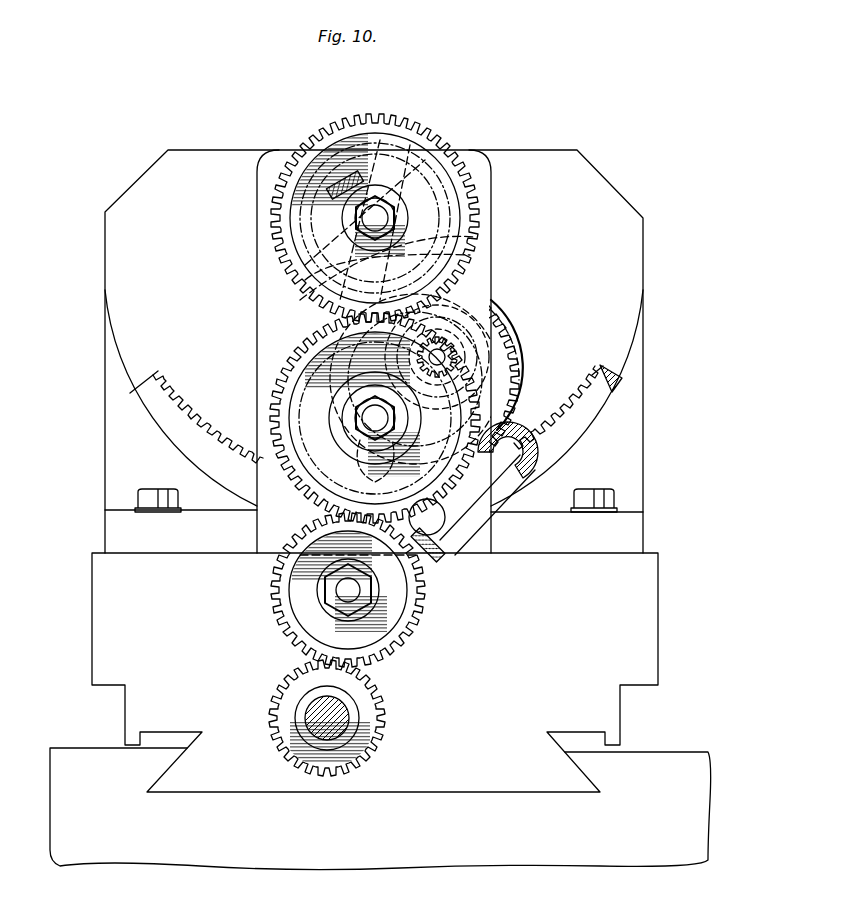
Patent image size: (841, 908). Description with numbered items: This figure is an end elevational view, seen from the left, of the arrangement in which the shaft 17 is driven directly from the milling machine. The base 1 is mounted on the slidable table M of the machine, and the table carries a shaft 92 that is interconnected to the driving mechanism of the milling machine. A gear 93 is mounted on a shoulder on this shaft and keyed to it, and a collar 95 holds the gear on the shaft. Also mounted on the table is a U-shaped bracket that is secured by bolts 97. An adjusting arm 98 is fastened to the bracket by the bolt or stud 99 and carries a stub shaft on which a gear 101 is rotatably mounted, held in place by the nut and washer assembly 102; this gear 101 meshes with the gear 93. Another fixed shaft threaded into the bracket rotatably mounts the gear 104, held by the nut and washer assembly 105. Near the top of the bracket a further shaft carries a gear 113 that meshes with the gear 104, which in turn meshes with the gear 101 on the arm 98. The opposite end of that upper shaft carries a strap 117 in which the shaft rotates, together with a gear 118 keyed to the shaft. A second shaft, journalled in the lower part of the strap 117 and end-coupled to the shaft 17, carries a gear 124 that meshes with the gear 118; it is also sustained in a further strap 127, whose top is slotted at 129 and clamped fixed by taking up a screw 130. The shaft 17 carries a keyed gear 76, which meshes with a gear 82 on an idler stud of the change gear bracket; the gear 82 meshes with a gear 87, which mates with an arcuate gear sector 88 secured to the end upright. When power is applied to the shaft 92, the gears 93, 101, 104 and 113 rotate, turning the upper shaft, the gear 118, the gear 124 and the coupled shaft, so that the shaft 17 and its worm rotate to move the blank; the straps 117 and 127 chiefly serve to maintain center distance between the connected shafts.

The base 1 is at (630, 533).
The shaft 17 is at (505, 320).
The gear 76 is at (452, 330).
The gear 82 is at (306, 318).
The gear 87 is at (332, 455).
The arcuate gear sector 88 is at (183, 395).
The shaft 92 is at (350, 712).
The gear 93 is at (378, 728).
The collar 95 is at (300, 700).
The bolts 97 is at (480, 252).
The adjusting arm 98 is at (495, 522).
The bolt or stud 99 is at (445, 530).
The gear 101 is at (420, 598).
The nut and washer assembly 102 is at (330, 594).
The gear 104 is at (272, 410).
The nut and washer assembly 105 is at (352, 418).
The gear 113 is at (282, 196).
The strap 117 is at (480, 276).
The gear 118 is at (435, 160).
The gear 124 is at (518, 345).
The strap 127 is at (480, 208).
The slot 129 is at (372, 168).
The screw 130 is at (402, 162).